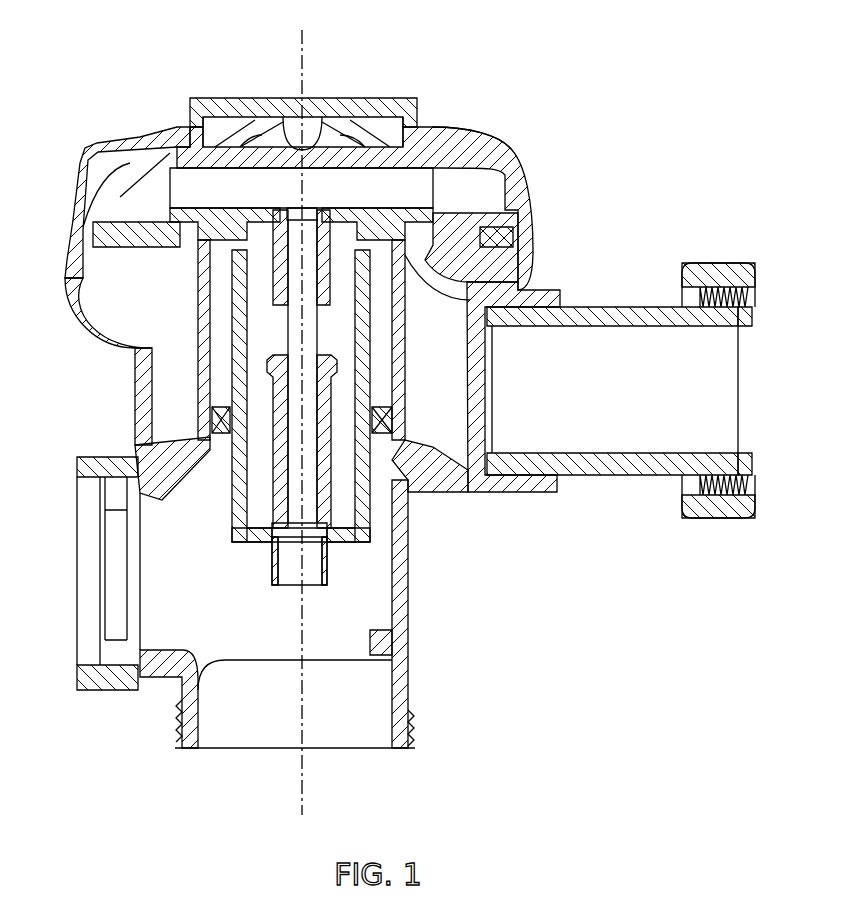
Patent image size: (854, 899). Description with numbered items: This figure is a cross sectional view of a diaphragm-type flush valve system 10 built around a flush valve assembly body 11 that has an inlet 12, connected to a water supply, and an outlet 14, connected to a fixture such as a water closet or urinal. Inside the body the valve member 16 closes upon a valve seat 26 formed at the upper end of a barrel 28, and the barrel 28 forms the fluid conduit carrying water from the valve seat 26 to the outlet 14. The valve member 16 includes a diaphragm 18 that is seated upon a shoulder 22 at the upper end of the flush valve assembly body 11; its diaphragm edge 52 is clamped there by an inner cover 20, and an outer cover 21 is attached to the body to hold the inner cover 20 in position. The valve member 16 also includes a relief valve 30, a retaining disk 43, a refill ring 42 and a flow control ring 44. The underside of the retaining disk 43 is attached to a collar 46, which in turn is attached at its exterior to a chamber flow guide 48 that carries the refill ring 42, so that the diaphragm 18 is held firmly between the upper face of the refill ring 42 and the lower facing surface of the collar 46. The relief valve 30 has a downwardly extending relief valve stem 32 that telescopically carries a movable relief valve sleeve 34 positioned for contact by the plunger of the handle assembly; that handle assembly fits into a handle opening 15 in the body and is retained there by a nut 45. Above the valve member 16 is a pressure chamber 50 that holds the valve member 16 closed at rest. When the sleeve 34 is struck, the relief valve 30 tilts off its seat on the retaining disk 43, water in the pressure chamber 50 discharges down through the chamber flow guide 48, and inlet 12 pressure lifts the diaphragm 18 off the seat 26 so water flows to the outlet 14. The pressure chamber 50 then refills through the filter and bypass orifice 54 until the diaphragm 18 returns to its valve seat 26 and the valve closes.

The flush valve system 10 is at (655, 122).
The flush valve assembly body 11 is at (135, 350).
The inlet 12 is at (600, 392).
The outlet 14 is at (326, 704).
The handle opening 15 is at (100, 562).
The valve member 16 is at (378, 515).
The diaphragm 18 is at (443, 230).
The inner cover 20 is at (465, 163).
The outer cover 21 is at (373, 97).
The shoulder 22 is at (512, 297).
The valve seat 26 is at (143, 300).
The barrel 28 is at (210, 342).
The relief valve 30 is at (322, 207).
The relief valve stem 32 is at (290, 340).
The relief valve sleeve 34 is at (272, 557).
The refill ring 42 is at (383, 283).
The retaining disk 43 is at (178, 203).
The flow control ring 44 is at (212, 415).
The nut 45 is at (108, 457).
The collar 46 is at (347, 280).
The chamber flow guide 48 is at (233, 512).
The pressure chamber 50 is at (276, 180).
The diaphragm edge 52 is at (508, 228).
The bypass orifice 54 is at (98, 200).